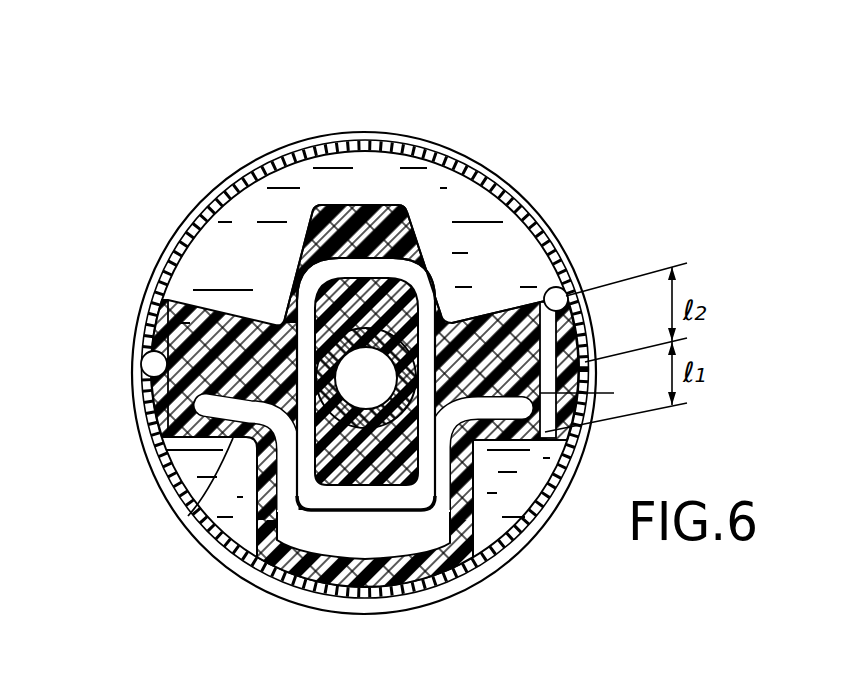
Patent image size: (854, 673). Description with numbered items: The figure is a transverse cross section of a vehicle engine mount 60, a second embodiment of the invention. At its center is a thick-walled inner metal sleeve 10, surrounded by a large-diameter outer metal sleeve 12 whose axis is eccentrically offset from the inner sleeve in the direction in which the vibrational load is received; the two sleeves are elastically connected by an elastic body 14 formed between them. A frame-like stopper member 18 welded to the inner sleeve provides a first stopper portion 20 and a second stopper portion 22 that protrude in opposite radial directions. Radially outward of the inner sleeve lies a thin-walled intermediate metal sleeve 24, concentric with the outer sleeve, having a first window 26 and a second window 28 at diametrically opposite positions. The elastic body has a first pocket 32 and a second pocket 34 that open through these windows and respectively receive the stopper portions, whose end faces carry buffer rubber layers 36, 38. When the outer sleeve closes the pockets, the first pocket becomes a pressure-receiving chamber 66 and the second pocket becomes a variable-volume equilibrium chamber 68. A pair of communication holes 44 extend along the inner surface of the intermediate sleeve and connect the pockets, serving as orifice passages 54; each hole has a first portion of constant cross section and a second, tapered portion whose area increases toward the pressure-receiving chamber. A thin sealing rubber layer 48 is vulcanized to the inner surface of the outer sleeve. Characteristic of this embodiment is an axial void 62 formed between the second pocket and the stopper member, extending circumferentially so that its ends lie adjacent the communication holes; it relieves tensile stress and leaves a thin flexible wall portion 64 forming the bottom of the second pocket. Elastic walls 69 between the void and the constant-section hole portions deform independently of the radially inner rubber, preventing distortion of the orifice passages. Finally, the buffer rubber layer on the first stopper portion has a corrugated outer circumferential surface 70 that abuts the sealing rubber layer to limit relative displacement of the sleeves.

The inner metal sleeve 10 is at (338, 384).
The outer metal sleeve 12 is at (497, 178).
The elastic body 14 is at (497, 311).
The stopper member 18 is at (415, 462).
The first stopper portion 20 is at (333, 268).
The second stopper portion 22 is at (343, 487).
The intermediate metal sleeve 24 is at (140, 348).
The first window 26 is at (165, 307).
The second window 28 is at (152, 470).
The first pocket 32 is at (192, 230).
The second pocket 34 is at (213, 465).
The buffer rubber layer 36 is at (378, 205).
The buffer rubber layer 38 is at (380, 500).
The communication hole 44 is at (563, 290).
The sealing rubber layer 48 is at (547, 527).
The orifice passage 54 is at (135, 433).
The vehicle engine mount 60 is at (201, 97).
The axial void 62 is at (313, 533).
The flexible wall portion 64 is at (443, 593).
The pressure-receiving chamber 66 is at (268, 182).
The variable-volume equilibrium chamber 68 is at (493, 530).
The elastic wall 69 is at (170, 420).
The outer circumferential surface 70 is at (401, 204).